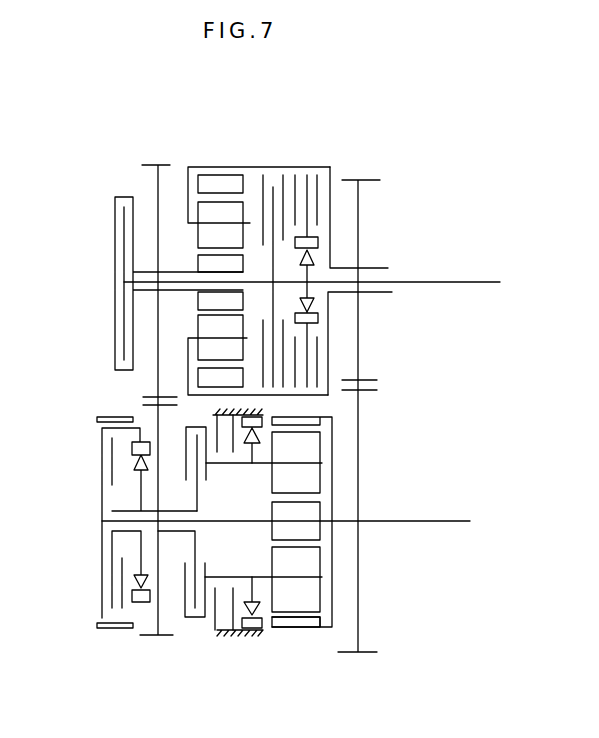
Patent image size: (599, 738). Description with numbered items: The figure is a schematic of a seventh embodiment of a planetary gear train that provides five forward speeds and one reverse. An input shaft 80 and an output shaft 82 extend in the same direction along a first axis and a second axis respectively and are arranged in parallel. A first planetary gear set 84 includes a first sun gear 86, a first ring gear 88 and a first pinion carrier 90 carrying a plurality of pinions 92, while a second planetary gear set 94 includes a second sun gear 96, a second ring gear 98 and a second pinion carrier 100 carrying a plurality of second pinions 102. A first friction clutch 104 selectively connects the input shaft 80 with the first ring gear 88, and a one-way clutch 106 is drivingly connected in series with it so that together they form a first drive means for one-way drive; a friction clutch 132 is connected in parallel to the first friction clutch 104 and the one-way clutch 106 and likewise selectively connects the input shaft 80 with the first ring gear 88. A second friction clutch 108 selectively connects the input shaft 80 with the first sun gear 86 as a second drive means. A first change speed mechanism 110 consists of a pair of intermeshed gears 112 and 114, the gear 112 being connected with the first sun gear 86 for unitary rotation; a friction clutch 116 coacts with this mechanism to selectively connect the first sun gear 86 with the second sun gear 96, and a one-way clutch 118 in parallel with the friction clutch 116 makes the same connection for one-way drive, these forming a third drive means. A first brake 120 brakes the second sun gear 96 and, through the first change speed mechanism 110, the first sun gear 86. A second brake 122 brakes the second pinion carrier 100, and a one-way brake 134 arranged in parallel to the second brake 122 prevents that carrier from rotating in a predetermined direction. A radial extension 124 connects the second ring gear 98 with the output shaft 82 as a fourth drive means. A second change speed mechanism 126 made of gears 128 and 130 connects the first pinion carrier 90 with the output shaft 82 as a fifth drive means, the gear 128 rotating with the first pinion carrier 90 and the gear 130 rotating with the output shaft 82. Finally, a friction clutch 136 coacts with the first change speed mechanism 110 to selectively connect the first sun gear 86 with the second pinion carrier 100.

The input shaft 80 is at (450, 282).
The output shaft 82 is at (422, 522).
The first planetary gear set 84 is at (195, 245).
The first sun gear 86 is at (205, 297).
The first ring gear 88 is at (226, 182).
The first pinion carrier 90 is at (188, 210).
The pinions 92 is at (207, 325).
The second planetary gear set 94 is at (323, 498).
The second sun gear 96 is at (273, 515).
The second ring gear 98 is at (298, 623).
The second pinion carrier 100 is at (245, 578).
The second pinions 102 is at (278, 562).
The first friction clutch 104 is at (318, 185).
The one-way clutch 106 is at (318, 253).
The second friction clutch 108 is at (115, 252).
The first change speed mechanism 110 is at (92, 385).
The gear 112 is at (158, 374).
The gear 114 is at (158, 420).
The friction clutch 116 is at (102, 478).
The one-way clutch 118 is at (143, 603).
The first brake 120 is at (97, 630).
The second brake 122 is at (216, 625).
The radial extension 124 is at (334, 613).
The second change speed mechanism 126 is at (446, 383).
The gear 128 is at (358, 368).
The gear 130 is at (360, 433).
The friction clutch 132 is at (257, 205).
The one-way brake 134 is at (262, 625).
The friction clutch 136 is at (183, 603).